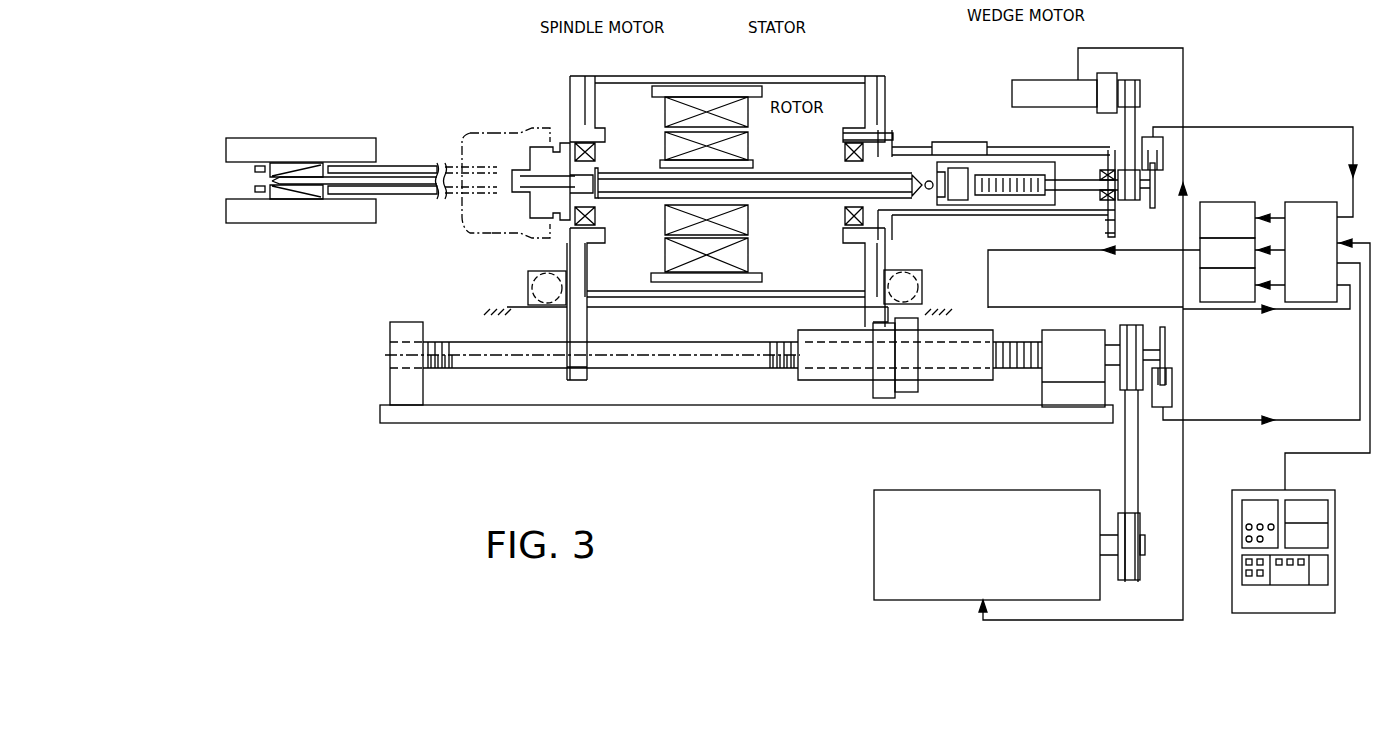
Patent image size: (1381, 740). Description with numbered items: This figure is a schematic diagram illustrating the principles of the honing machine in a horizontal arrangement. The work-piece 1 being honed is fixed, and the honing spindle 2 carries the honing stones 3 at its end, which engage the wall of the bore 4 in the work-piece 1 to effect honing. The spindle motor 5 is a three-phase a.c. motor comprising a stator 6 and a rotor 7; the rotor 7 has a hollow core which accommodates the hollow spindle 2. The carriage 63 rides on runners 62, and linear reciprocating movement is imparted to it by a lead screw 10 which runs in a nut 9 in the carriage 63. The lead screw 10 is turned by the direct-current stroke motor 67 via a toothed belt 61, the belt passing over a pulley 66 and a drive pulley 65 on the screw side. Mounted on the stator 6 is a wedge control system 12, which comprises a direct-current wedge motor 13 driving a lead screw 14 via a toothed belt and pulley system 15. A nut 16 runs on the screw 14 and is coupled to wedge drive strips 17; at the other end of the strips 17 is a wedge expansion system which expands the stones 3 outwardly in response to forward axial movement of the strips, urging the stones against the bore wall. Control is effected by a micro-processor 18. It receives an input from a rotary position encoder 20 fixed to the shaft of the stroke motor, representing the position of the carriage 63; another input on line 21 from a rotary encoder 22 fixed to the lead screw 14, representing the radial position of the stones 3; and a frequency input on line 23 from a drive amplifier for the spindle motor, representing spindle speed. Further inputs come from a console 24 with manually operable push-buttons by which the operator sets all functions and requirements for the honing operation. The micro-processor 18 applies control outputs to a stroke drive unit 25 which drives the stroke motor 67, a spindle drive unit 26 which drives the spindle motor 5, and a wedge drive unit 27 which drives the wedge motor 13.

The work-piece 1 is at (297, 138).
The honing spindle 2 is at (417, 166).
The honing stones 3 is at (313, 163).
The bore 4 is at (238, 163).
The spindle motor 5 is at (650, 110).
The stator 6 is at (712, 112).
The rotor 7 is at (745, 146).
The nut 9 is at (905, 355).
The lead screw 10 is at (660, 365).
The wedge control system 12 is at (1012, 120).
The wedge motor 13 is at (1037, 80).
The lead screw 14 is at (1095, 172).
The toothed belt and pulley system 15 is at (1138, 118).
The nut 16 is at (1057, 172).
The wedge drive strips 17 is at (417, 194).
The micro-processor 18 is at (1305, 204).
The rotary position encoder 20 is at (1165, 342).
The line 21 is at (1210, 124).
The rotary encoder 22 is at (1155, 197).
The line 23 is at (1297, 310).
The console 24 is at (1250, 490).
The stroke drive unit 25 is at (1227, 302).
The spindle drive unit 26 is at (1200, 254).
The wedge drive unit 27 is at (1252, 204).
The toothed belt 61 is at (1133, 462).
The runners 62 is at (512, 306).
The carriage 63 is at (570, 330).
The bearing block 65 is at (1120, 375).
The pulley 66 is at (1137, 575).
The stroke motor 67 is at (987, 545).